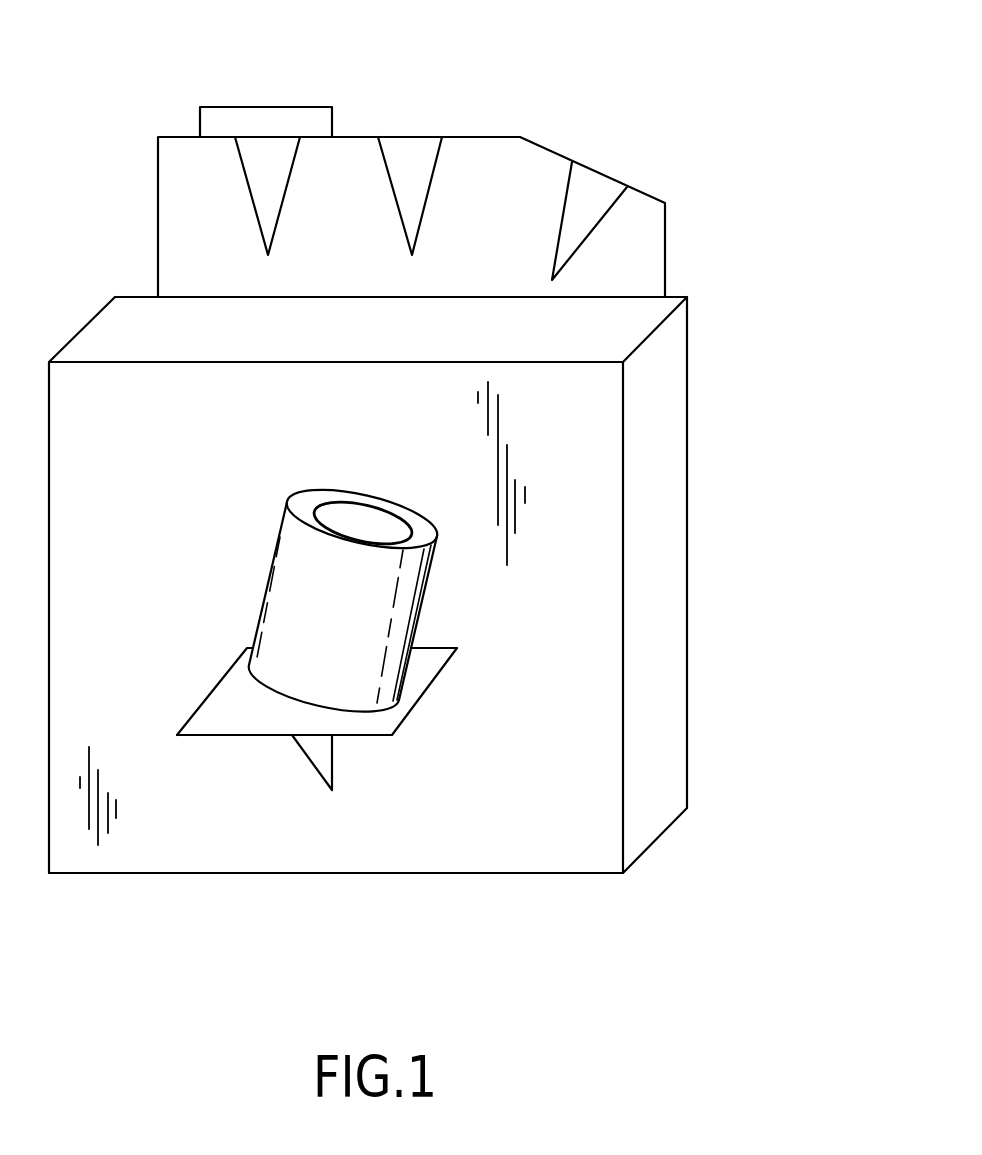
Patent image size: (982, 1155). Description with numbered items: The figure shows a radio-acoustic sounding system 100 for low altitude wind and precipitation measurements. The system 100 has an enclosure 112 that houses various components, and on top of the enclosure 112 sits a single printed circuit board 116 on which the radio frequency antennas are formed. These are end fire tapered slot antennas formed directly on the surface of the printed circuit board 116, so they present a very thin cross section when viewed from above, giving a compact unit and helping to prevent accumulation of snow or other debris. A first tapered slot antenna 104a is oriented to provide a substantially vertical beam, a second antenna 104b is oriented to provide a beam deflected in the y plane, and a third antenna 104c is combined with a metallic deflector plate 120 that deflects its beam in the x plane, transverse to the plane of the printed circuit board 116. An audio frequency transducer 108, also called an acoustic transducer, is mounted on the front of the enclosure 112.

The radio-acoustic sounding system 100 is at (735, 604).
The tapered slot antenna 104a is at (413, 137).
The second antenna 104b is at (607, 172).
The third antenna 104c is at (240, 162).
The audio frequency transducer 108 is at (275, 563).
The enclosure 112 is at (505, 873).
The printed circuit board 116 is at (667, 252).
The metallic plate 120 is at (263, 107).